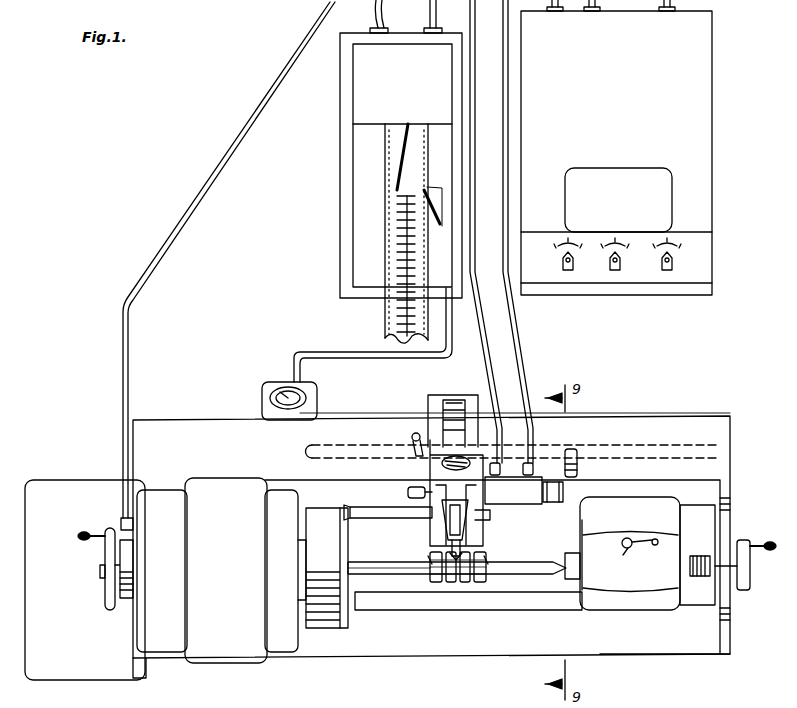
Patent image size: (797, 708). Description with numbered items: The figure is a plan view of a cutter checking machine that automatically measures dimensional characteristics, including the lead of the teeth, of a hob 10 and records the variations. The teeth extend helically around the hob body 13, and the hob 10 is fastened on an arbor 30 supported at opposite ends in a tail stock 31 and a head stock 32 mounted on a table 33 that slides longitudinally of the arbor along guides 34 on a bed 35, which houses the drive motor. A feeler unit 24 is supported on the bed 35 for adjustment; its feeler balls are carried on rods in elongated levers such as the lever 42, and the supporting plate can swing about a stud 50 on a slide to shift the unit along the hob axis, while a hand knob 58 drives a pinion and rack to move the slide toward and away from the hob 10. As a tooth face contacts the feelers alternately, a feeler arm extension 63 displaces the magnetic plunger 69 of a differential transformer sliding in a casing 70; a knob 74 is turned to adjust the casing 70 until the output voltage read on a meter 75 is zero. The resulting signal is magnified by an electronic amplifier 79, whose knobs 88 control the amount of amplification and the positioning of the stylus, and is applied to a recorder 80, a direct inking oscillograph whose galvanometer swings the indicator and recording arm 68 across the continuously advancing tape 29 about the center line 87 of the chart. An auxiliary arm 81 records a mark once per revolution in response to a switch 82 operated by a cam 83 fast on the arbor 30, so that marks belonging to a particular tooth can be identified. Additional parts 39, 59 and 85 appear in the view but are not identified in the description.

The hob 10 is at (456, 584).
The hob body 13 is at (486, 560).
The feeler unit 24 is at (446, 552).
The tape 29 is at (384, 324).
The arbor 30 is at (518, 562).
The tail stock 31 is at (583, 545).
The head stock 32 is at (228, 478).
The table 33 is at (682, 650).
The guides 34 is at (348, 422).
The bed 35 is at (732, 626).
The handwheel 39 is at (107, 612).
The elongated lever 42 is at (438, 536).
The stud 50 is at (445, 462).
The hand knob 58 is at (579, 466).
The bracket 59 is at (488, 535).
The feeler arm extension 63 is at (461, 470).
The indicator and recording arm 68 is at (400, 168).
The magnetic plunger 69 is at (474, 491).
The casing 70 is at (563, 498).
The knob 74 is at (563, 492).
The meter 75 is at (306, 398).
The electronic amplifier 79 is at (700, 111).
The recorder 80 is at (364, 104).
The auxiliary arm 81 is at (439, 200).
The switch 82 is at (122, 526).
The cam 83 is at (128, 600).
The adjusting knob 85 is at (408, 492).
The center line of the chart 87 is at (406, 172).
The knobs 88 is at (570, 272).